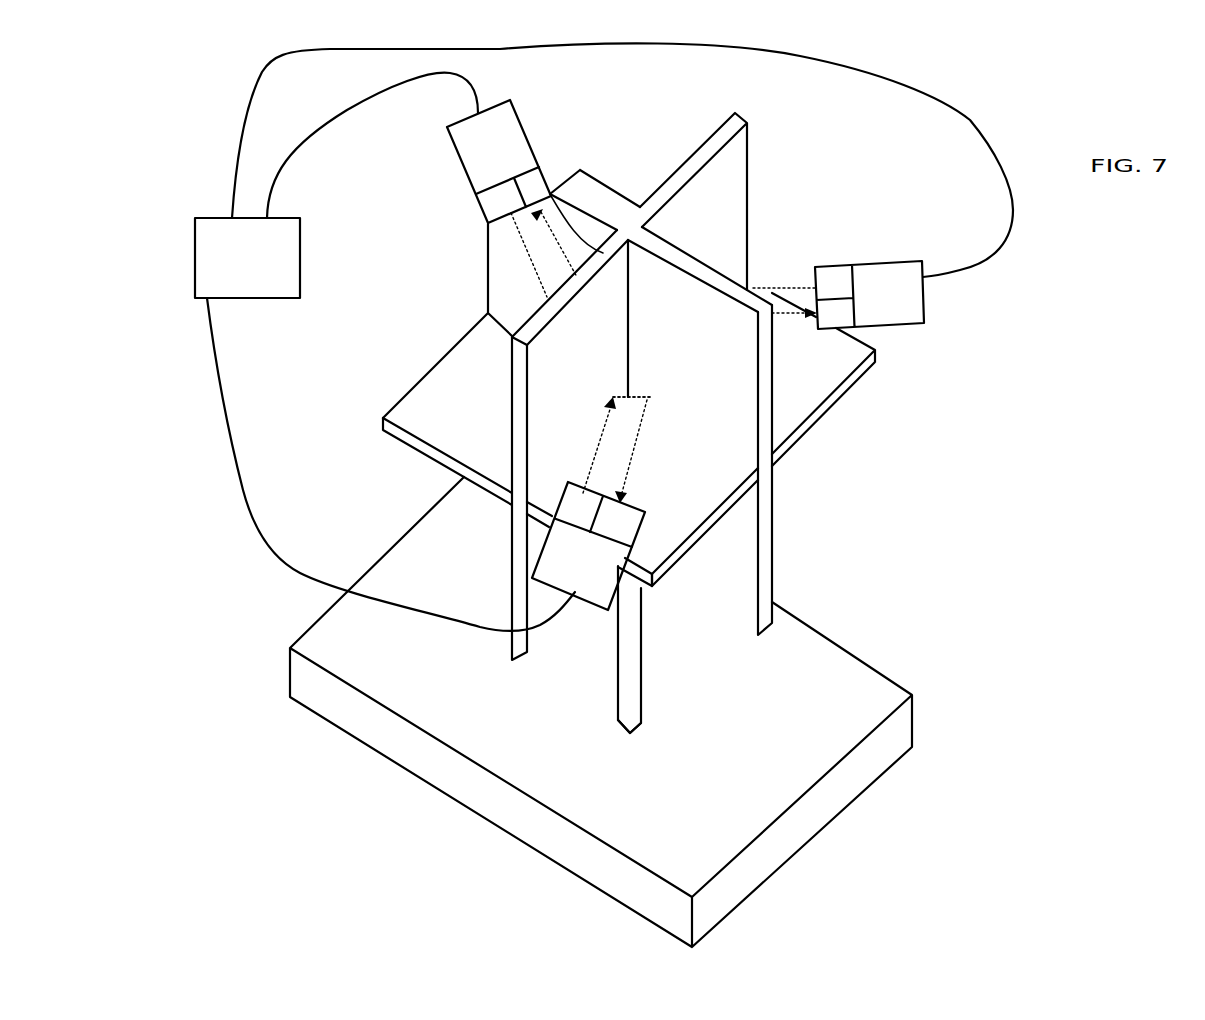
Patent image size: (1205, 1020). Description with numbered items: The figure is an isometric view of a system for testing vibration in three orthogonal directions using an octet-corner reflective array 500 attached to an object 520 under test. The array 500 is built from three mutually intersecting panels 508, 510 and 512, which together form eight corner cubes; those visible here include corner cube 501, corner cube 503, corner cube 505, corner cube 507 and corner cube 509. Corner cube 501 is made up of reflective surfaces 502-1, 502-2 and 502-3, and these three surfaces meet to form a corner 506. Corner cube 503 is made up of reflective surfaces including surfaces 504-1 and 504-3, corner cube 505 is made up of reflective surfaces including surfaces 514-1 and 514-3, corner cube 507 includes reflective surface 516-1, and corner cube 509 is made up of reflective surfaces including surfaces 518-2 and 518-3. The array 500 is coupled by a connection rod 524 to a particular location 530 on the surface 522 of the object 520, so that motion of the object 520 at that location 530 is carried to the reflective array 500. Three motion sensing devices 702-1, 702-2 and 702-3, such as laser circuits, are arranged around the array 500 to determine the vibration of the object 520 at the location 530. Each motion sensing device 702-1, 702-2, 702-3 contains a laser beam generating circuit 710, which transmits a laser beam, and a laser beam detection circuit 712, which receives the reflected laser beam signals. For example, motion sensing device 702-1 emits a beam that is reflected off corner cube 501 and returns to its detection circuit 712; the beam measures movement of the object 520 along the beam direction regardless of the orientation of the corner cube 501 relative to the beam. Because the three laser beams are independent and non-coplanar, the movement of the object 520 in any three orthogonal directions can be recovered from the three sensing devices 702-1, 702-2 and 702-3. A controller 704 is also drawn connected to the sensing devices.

The octet-corner reflective array 500 is at (795, 175).
The corner cube 501 is at (689, 491).
The reflective surface 502-1 is at (695, 522).
The reflective surface 502-2 is at (587, 402).
The reflective surface 502-3 is at (707, 352).
The corner cube 503 is at (480, 358).
The reflective surface 504-1 is at (493, 414).
The reflective surface 504-3 is at (530, 306).
The corner cube 505 is at (815, 356).
The corner 506 is at (633, 408).
The corner cube 507 is at (625, 188).
The panel 508 is at (770, 500).
The corner cube 509 is at (696, 588).
The panel 510 is at (725, 287).
The panel 512 is at (552, 193).
The reflective surface 514-1 is at (823, 391).
The reflective surface 514-3 is at (733, 222).
The reflective surface 516-1 is at (605, 190).
The reflective surface 518-2 is at (543, 621).
The reflective surface 518-3 is at (740, 592).
The object under test 520 is at (896, 654).
The surface 522 is at (825, 725).
The connection rod 524 is at (630, 637).
The location 530 is at (637, 730).
The motion sensing device 702-1 is at (875, 277).
The motion sensing device 702-2 is at (488, 158).
The motion sensing device 702-3 is at (560, 567).
The controller 704 is at (246, 281).
The laser beam generating circuit 710 is at (828, 290).
The laser beam detection circuit 712 is at (533, 190).